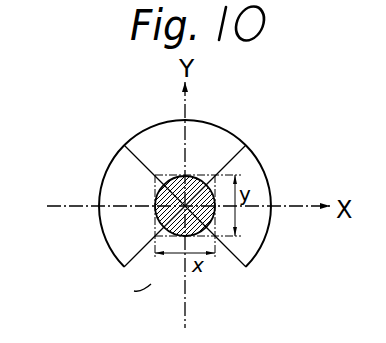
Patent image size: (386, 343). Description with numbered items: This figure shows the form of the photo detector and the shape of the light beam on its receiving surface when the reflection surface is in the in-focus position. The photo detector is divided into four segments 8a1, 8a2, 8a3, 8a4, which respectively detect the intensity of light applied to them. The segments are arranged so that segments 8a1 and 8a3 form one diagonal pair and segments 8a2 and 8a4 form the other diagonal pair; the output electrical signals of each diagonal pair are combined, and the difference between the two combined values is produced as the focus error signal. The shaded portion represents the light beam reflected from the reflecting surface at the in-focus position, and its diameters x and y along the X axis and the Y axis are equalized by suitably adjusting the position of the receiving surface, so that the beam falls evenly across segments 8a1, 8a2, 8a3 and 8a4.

The segment 8a1 is at (222, 128).
The segment 8a2 is at (262, 241).
The segment 8a3 is at (246, 267).
The segment 8a4 is at (105, 186).